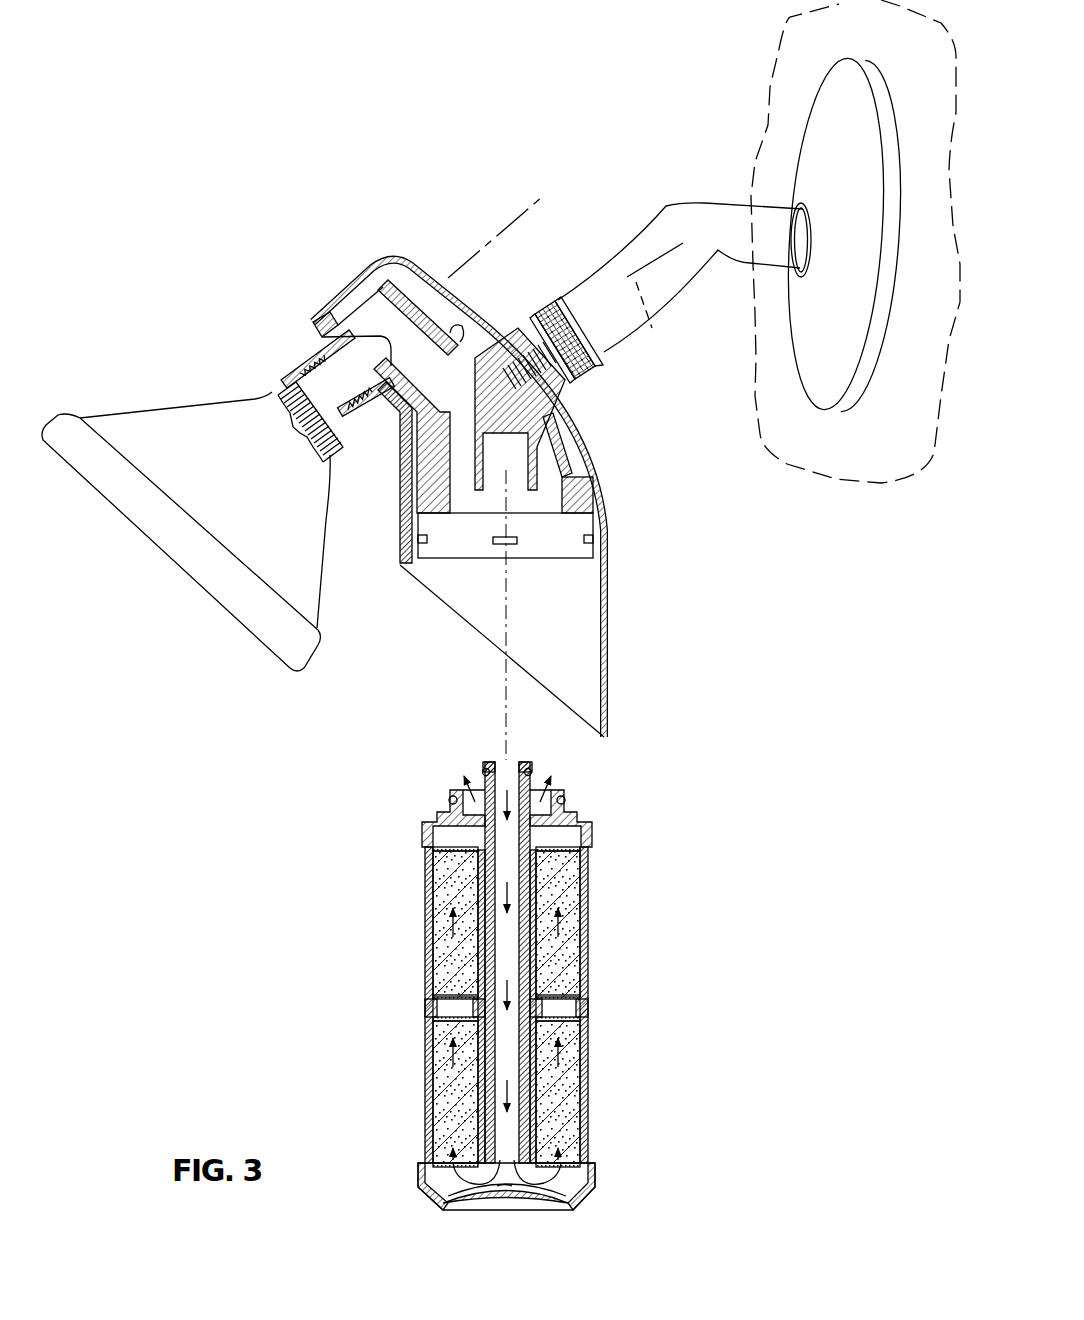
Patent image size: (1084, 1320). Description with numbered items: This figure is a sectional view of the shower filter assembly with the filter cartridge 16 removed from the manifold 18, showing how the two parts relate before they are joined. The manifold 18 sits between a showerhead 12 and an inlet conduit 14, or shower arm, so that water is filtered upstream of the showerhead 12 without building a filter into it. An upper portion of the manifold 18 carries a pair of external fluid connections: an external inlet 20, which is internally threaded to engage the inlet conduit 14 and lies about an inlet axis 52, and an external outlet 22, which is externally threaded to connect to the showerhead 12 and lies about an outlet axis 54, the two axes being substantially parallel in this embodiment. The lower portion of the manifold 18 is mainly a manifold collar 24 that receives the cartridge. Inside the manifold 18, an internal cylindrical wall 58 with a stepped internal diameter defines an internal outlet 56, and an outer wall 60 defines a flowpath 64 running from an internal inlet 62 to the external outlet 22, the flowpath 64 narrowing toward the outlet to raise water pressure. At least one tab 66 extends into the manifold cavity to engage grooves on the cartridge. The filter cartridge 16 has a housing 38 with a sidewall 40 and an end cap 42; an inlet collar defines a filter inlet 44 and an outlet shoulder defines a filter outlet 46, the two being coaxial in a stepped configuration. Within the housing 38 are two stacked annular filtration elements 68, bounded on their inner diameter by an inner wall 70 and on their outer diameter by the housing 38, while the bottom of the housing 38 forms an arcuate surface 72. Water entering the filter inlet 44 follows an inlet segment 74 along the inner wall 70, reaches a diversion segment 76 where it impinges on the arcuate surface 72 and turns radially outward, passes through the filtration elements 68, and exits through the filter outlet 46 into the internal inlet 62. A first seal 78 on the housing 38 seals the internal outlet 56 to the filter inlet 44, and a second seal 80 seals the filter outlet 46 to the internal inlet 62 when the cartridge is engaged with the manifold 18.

The showerhead 12 is at (195, 420).
The inlet conduit 14 is at (703, 213).
The filter cartridge 16 is at (510, 978).
The manifold 18 is at (493, 489).
The external inlet 20 is at (568, 392).
The external outlet 22 is at (337, 423).
The manifold collar 24 is at (610, 638).
The housing 38 is at (422, 920).
The sidewall 40 is at (432, 952).
The end cap 42 is at (443, 1203).
The filter inlet 44 is at (510, 760).
The filter outlet 46 is at (478, 790).
The inlet axis 52 is at (655, 323).
The outlet axis 54 is at (512, 220).
The internal outlet 56 is at (537, 482).
The internal cylindrical wall 58 is at (490, 482).
The outer wall 60 is at (577, 503).
The internal inlet 62 is at (462, 493).
The flowpath 64 is at (402, 330).
The tab 66 is at (513, 544).
The filtration element 68 is at (557, 962).
The inner wall 70 is at (453, 1100).
The arcuate surface 72 is at (583, 1173).
The inlet segment 74 is at (512, 942).
The diversion segment 76 is at (500, 1187).
The first seal 78 is at (530, 772).
The second seal 80 is at (564, 796).